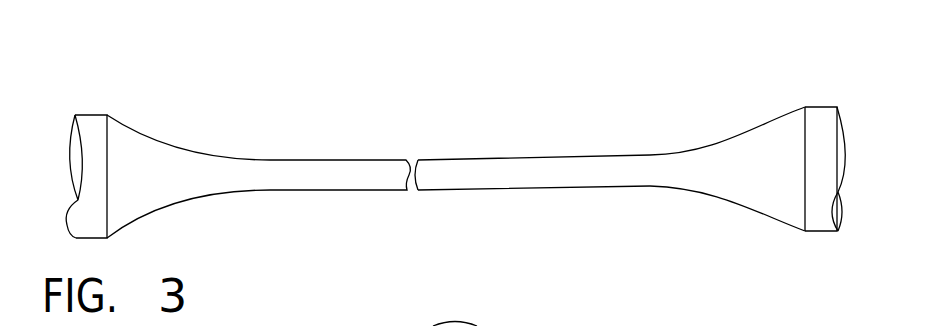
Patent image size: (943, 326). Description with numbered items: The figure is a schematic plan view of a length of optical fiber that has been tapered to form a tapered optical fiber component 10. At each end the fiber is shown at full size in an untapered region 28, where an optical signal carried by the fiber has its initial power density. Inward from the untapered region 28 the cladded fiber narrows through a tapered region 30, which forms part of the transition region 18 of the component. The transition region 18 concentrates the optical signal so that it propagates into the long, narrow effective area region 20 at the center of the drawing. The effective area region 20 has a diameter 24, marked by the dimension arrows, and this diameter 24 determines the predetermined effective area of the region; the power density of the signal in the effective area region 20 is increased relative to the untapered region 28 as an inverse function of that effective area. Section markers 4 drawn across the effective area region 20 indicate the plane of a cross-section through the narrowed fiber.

The tapered optical fiber component 10 is at (429, 119).
The transition region 18 is at (456, 119).
The effective area region 20 is at (455, 121).
The diameter 24 is at (352, 112).
The untapered region 28 is at (103, 90).
The tapered region 30 is at (107, 113).
The section line 4- 4 is at (457, 268).